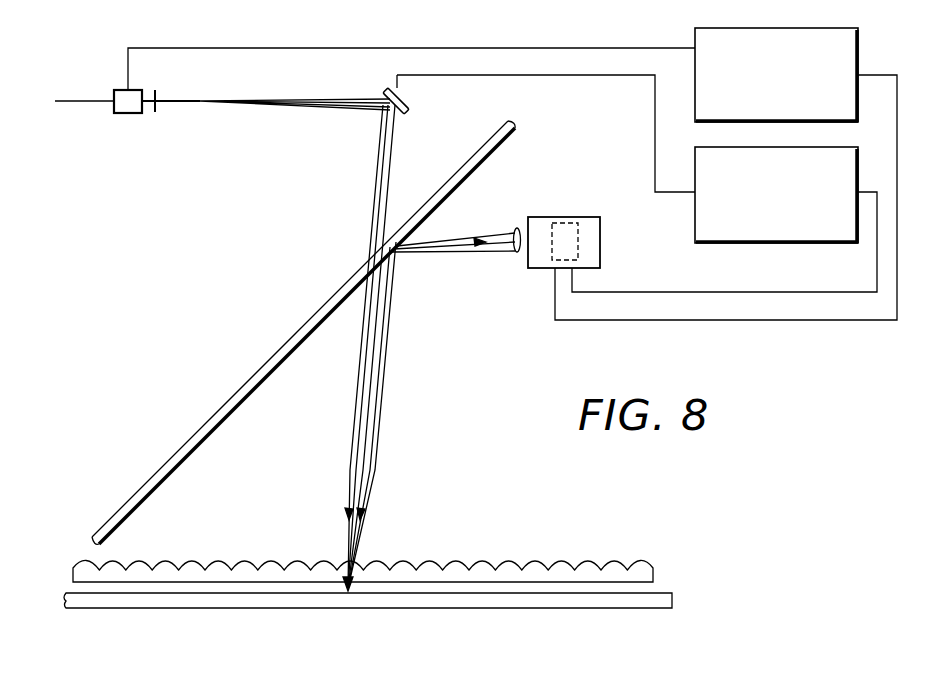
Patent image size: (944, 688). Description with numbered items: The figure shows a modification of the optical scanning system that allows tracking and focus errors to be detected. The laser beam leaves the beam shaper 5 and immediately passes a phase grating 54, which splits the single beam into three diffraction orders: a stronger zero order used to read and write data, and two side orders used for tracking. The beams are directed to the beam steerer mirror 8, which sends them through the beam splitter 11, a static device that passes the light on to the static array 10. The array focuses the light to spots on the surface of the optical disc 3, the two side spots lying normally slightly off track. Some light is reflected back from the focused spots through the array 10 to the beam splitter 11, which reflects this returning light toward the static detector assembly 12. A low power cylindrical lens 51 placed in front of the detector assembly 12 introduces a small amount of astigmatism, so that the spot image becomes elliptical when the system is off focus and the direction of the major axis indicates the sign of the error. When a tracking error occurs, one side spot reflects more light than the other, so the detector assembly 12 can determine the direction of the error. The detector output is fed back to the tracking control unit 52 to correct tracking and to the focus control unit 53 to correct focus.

The beam shaper 5 is at (116, 113).
The phase grating 54 is at (156, 112).
The beam steerer mirror 8 is at (408, 104).
The beam splitter 11 is at (280, 348).
The low power cylindrical lens 51 is at (516, 250).
The static detector assembly 12 is at (572, 217).
The focus control unit 53 is at (695, 28).
The tracking control unit 52 is at (695, 243).
The static array 10 is at (653, 568).
The substrate 3 is at (672, 595).